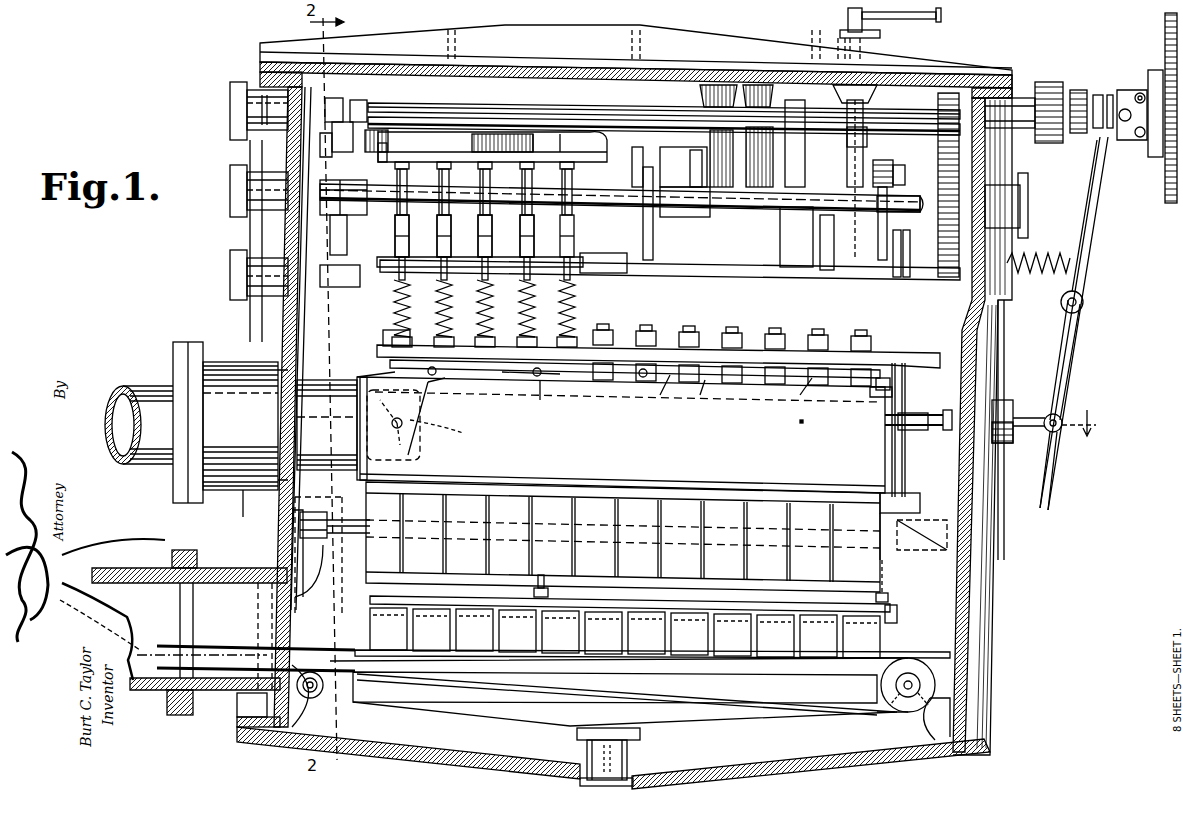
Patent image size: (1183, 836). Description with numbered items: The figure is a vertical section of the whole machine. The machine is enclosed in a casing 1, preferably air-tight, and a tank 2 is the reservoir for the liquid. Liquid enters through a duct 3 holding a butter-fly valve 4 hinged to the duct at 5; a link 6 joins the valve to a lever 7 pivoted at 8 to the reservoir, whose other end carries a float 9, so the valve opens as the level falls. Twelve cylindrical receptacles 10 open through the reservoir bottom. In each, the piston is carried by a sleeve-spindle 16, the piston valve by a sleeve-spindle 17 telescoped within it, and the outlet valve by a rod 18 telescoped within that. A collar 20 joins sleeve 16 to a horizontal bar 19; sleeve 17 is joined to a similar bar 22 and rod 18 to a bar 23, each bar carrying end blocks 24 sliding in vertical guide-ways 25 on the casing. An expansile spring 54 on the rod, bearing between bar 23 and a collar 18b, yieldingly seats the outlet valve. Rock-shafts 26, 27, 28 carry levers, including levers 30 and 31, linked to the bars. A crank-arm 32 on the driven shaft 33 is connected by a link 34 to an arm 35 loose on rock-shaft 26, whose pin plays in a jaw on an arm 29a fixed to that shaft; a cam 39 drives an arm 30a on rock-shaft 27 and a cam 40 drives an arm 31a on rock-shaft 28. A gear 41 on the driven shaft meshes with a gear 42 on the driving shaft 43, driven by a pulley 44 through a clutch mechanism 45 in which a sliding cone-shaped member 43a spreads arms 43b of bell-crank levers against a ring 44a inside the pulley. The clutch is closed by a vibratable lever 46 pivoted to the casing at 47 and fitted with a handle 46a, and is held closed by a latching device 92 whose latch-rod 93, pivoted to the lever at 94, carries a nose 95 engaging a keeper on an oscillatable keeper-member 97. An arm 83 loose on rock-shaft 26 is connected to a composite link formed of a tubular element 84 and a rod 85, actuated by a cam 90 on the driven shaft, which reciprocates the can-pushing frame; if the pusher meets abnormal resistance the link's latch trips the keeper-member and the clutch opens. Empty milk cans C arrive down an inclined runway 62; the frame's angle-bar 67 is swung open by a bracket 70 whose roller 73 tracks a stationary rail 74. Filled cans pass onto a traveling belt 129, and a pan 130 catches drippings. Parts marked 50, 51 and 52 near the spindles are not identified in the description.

The casing 1 is at (990, 603).
The tank 2 is at (622, 435).
The duct 3 is at (231, 429).
The butter-fly valve 4 is at (460, 440).
The pivot 5 is at (392, 430).
The link 6 is at (450, 395).
The lever 7 is at (575, 372).
The pivot 8 is at (545, 400).
The float 9 is at (700, 400).
The receptacle 10 is at (520, 540).
The sleeve-spindle 16 is at (375, 369).
The sleeve-spindle 17 is at (520, 378).
The rod 18 is at (407, 190).
The collar 18b is at (561, 144).
The bar 19 is at (478, 375).
The collar 20 is at (668, 392).
The bar 22 is at (503, 262).
The bar 23 is at (750, 287).
The block 24 is at (275, 135).
The guide-ways 25 is at (285, 228).
The rock-shaft 26 is at (725, 370).
The rock-shaft 27 is at (582, 225).
The rock-shaft 28 is at (678, 96).
The arm 29a is at (603, 256).
The lever 30 is at (345, 205).
The arm 30a is at (870, 140).
The lever 31 is at (372, 101).
The arm 31a is at (785, 200).
The crank-arm 32 is at (672, 162).
The driven shaft 33 is at (913, 198).
The link 34 is at (700, 220).
The arm 35 is at (698, 222).
The cam 39 is at (827, 250).
The cam 40 is at (810, 262).
The gear 41 is at (937, 154).
The gear 42 is at (922, 116).
The driving shaft 43 is at (898, 118).
The cone-shaped member 43a is at (1110, 165).
The arms 43b is at (1138, 92).
The pulley 44 is at (1165, 40).
The ring 44a is at (1158, 160).
The clutch mechanism 45 is at (1128, 95).
The vibratable lever 46 is at (1095, 240).
The handle 46a is at (1048, 492).
The pivot 47 is at (1080, 315).
The collar 50 is at (551, 262).
The collar 51 is at (465, 262).
The collar 52 is at (585, 262).
The expansile spring 54 is at (509, 144).
The inclined runway 62 is at (152, 550).
The angle-bar 67 is at (893, 622).
The bracket 70 is at (543, 588).
The roller 73 is at (331, 557).
The stationary rail 74 is at (487, 600).
The arm 83 is at (1000, 220).
The tubular element 84 is at (1022, 240).
The rod 85 is at (880, 392).
The cam 90 is at (892, 215).
The latching device 92 is at (950, 432).
The latch-rod 93 is at (1028, 425).
The pivot connection 94 is at (1062, 422).
The nose 95 is at (880, 455).
The keeper-member 97 is at (906, 478).
The traveling belt 129 is at (838, 660).
The pan 130 is at (548, 712).
The containers C is at (652, 633).